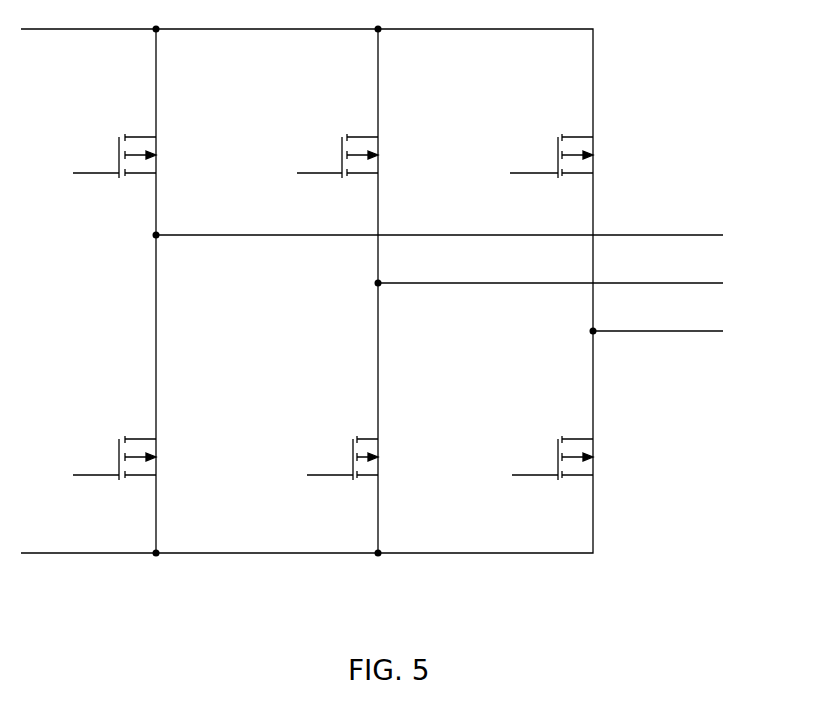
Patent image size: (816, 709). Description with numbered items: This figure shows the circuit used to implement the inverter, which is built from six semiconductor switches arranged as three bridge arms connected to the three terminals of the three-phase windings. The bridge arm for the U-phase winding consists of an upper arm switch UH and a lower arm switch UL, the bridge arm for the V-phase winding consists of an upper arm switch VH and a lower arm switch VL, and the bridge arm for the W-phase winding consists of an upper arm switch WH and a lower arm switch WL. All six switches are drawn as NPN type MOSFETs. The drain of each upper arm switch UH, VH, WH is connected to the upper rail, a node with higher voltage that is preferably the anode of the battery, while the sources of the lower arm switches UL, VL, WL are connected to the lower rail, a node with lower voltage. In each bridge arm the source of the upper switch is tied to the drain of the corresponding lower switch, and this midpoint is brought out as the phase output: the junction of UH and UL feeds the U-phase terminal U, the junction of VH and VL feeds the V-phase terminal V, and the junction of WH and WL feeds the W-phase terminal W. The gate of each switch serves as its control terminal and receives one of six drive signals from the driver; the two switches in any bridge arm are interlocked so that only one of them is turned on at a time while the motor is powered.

The upper arm switch UH is at (101, 156).
The upper arm switch VH is at (326, 156).
The upper arm switch WH is at (538, 156).
The lower arm switch UL is at (97, 458).
The lower arm switch VL is at (324, 458).
The lower arm switch WL is at (538, 458).
The U-phase terminal U is at (452, 235).
The V-phase terminal V is at (563, 282).
The W-phase terminal W is at (673, 332).